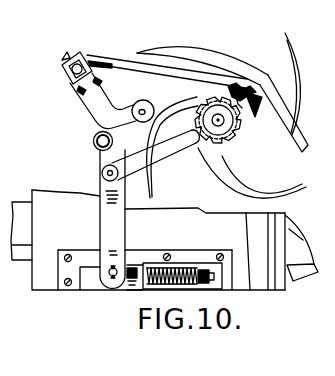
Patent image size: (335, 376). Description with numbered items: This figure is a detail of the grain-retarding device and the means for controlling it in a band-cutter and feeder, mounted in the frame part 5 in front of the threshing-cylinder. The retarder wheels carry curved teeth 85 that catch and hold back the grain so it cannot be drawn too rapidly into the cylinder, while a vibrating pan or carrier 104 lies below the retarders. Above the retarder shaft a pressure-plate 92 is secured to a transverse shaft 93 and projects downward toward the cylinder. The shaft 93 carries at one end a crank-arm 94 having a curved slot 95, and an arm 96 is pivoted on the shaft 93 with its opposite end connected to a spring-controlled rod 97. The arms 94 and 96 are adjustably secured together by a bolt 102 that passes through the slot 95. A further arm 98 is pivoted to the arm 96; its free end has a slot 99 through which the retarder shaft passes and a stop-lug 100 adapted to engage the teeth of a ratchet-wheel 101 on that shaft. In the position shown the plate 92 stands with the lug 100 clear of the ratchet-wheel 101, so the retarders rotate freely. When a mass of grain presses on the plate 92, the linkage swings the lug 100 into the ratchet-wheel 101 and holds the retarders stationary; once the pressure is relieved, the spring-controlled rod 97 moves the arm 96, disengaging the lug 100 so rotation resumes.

The frame part 5 is at (148, 240).
The curved teeth 85 is at (169, 43).
The pressure-plates 92 is at (285, 92).
The transverse shaft 93 is at (87, 58).
The crank-arm 94 is at (110, 90).
The curved slot 95 is at (150, 102).
The arm 96 is at (121, 224).
The spring-controlled rod 97 is at (131, 284).
The arm 98 is at (161, 161).
The slot 99 is at (245, 78).
The stop-lug 100 is at (258, 97).
The ratchet-wheel 101 is at (237, 143).
The bolt 102 is at (93, 143).
The vibrating pan or carrier 104 is at (291, 243).